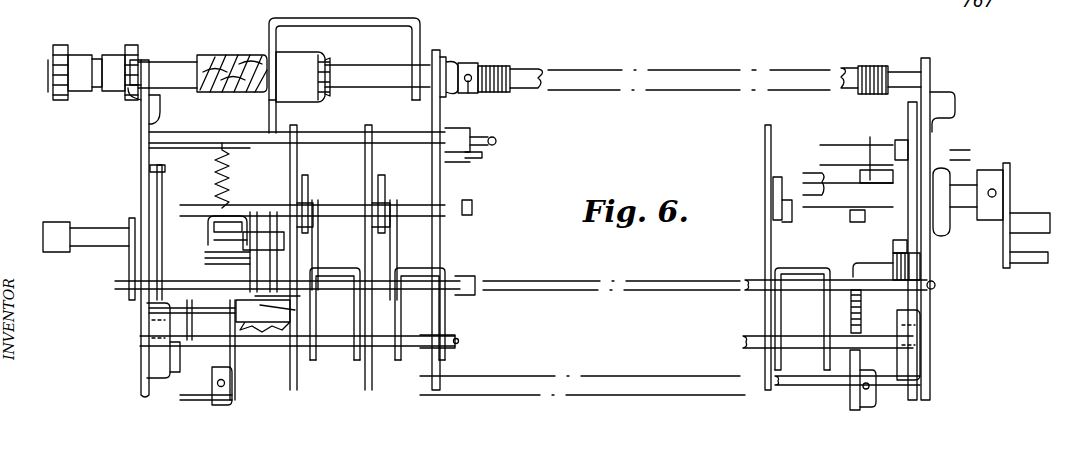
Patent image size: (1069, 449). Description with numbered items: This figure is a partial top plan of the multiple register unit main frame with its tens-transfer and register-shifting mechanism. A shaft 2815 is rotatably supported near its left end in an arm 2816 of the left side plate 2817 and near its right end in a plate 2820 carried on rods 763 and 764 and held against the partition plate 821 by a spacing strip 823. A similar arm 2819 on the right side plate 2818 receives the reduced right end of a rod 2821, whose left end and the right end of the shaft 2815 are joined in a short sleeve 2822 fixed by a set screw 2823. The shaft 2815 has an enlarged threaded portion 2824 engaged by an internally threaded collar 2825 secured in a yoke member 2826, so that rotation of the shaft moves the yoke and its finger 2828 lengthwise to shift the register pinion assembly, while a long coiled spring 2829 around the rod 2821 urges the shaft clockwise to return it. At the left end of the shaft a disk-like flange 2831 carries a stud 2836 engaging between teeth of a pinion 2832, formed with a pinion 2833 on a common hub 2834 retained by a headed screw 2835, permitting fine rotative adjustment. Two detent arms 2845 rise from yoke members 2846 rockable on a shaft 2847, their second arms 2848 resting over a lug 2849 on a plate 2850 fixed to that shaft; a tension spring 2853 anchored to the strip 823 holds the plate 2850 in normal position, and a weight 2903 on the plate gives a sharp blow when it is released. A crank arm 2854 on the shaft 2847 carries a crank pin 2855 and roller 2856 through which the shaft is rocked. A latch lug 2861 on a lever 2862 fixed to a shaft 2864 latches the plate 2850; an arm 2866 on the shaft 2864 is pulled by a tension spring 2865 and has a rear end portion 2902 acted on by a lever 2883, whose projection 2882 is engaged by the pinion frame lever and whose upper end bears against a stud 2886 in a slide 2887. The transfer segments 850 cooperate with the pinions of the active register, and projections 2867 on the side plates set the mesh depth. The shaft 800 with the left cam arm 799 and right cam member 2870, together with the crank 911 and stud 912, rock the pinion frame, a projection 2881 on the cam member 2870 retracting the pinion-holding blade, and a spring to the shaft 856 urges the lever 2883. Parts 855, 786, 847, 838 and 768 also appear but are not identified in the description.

The pinion 2833 is at (58, 45).
The headed screw 2835 is at (50, 78).
The common hub 2834 is at (97, 57).
The pinion 2832 is at (138, 48).
The stud 2836 is at (167, 66).
The disk-like flange 2831 is at (135, 94).
The threaded portion 2824 is at (240, 55).
The yoke member 2826 is at (403, 27).
The collar 2825 is at (303, 90).
The shaft 2815 is at (358, 78).
The plate 2820 is at (432, 121).
The sleeve 2822 is at (470, 62).
The set screw 2823 is at (468, 82).
The coiled spring 2829 is at (502, 70).
The rod 2821 is at (535, 86).
The arm 2816 is at (141, 122).
The left side plate 2817 is at (157, 174).
The projections 2867 is at (165, 100).
The finger 2828 is at (268, 132).
The tension spring 2853 is at (222, 143).
The cam arm 799 is at (166, 169).
The lug 2849 is at (215, 208).
The plate 2850 is at (210, 236).
The weight 2903 is at (207, 249).
The second arm 2848 is at (273, 212).
The transfer segments 850 is at (309, 188).
The bail 855 is at (330, 268).
The roller 2856 is at (60, 222).
The crank pin 2855 is at (112, 236).
The crank arm 2854 is at (130, 264).
The shaft 2847 is at (150, 293).
The block 786 is at (147, 318).
The latch lug 2861 is at (192, 320).
The arm 2866 is at (176, 352).
The lever 2862 is at (255, 350).
The shaft 2864 is at (252, 385).
The yoke members 2846 is at (263, 318).
The detent arms 2845 is at (283, 300).
The pin 847 is at (457, 340).
The partition plate 821 is at (441, 241).
The rod 764 is at (497, 141).
The spacing strip 823 is at (478, 136).
The rod 763 is at (460, 165).
The pin 838 is at (463, 208).
The arm 2819 is at (931, 65).
The projection 2881 is at (910, 106).
The projection 2882 is at (872, 145).
The slide 2887 is at (936, 140).
The stud 2886 is at (940, 180).
The shaft 800 is at (822, 190).
The stud 912 is at (1025, 225).
The crank 911 is at (1008, 246).
The lever 2883 is at (894, 247).
The cam member 2870 is at (915, 270).
The rear end portion 2902 is at (850, 265).
The shaft 856 is at (936, 285).
The tension spring 2865 is at (846, 300).
The right side plate 2818 is at (931, 312).
The block 768 is at (913, 323).